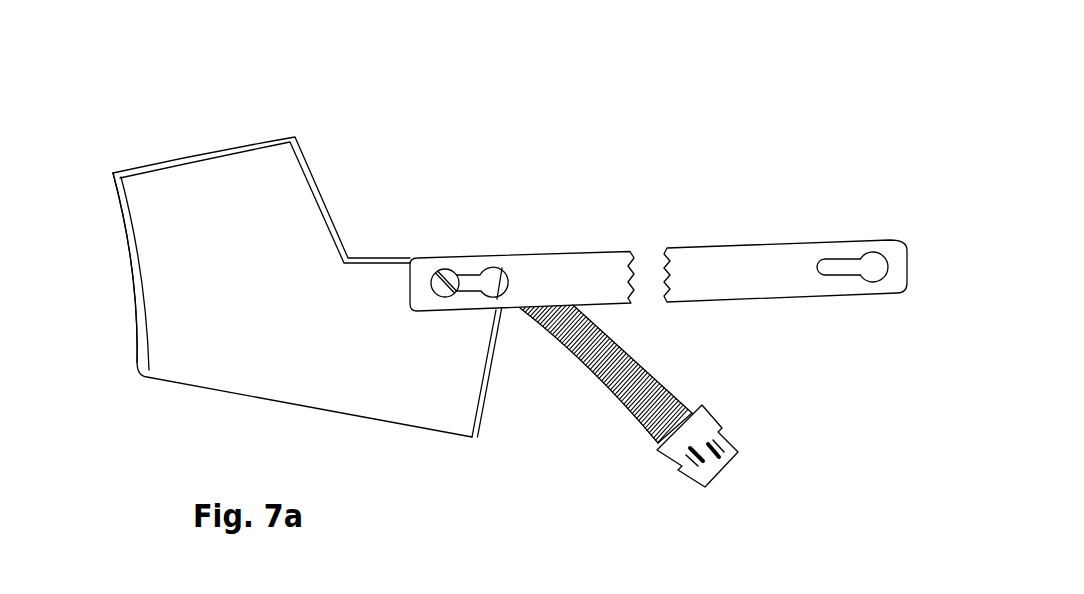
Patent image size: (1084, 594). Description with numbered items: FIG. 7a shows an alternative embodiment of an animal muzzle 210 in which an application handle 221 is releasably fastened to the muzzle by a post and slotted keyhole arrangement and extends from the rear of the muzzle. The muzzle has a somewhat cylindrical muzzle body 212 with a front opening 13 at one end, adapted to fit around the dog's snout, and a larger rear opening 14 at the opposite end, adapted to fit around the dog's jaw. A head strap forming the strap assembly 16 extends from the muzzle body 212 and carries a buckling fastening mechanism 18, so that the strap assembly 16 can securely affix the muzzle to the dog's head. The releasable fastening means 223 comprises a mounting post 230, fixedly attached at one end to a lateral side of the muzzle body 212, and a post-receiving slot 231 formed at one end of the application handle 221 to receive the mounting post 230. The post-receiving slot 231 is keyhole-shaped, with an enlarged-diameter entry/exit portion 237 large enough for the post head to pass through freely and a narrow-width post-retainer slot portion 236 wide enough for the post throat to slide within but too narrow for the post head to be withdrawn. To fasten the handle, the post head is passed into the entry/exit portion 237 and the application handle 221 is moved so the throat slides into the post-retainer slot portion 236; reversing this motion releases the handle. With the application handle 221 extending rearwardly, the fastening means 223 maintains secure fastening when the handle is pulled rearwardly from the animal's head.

The muzzle 210 is at (258, 86).
The muzzle body 212 is at (293, 353).
The front opening 13 is at (116, 283).
The rear opening 14 is at (497, 392).
The releasable fastening means 223 is at (462, 214).
The mounting post 230 is at (440, 268).
The post-receiving slot 231 is at (488, 277).
The application handle 221 is at (688, 263).
The enlarged-diameter entry/exit portion 237 is at (868, 250).
The narrow-width post-retainer slot portion 236 is at (833, 265).
The strap assembly 16 is at (620, 398).
The buckling fastening mechanism 18 is at (708, 475).